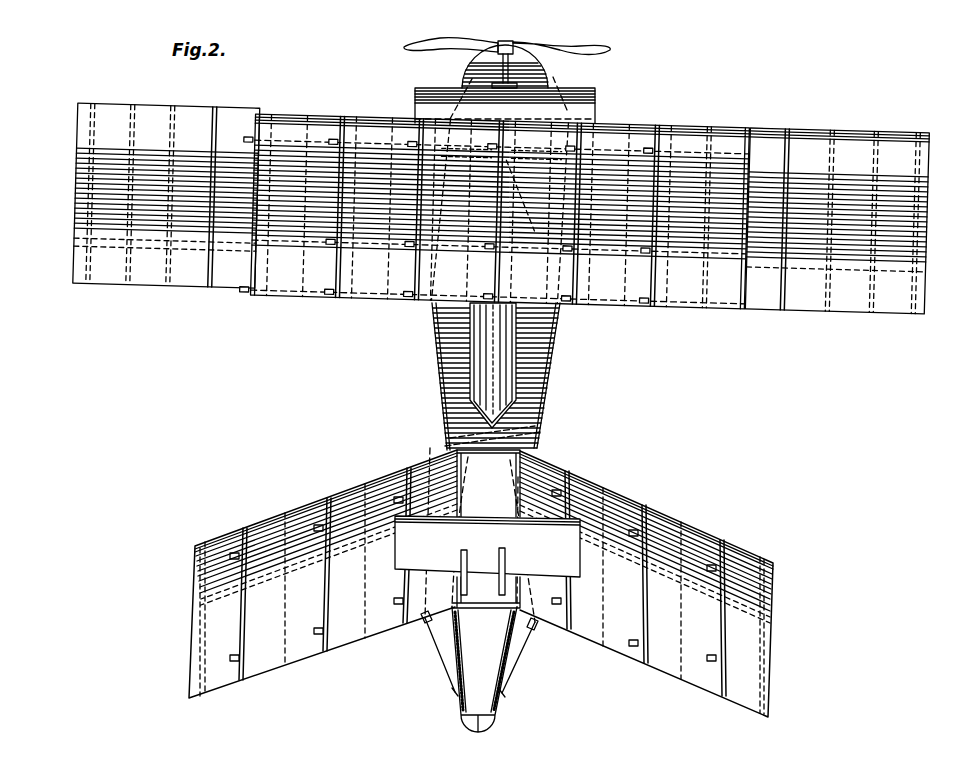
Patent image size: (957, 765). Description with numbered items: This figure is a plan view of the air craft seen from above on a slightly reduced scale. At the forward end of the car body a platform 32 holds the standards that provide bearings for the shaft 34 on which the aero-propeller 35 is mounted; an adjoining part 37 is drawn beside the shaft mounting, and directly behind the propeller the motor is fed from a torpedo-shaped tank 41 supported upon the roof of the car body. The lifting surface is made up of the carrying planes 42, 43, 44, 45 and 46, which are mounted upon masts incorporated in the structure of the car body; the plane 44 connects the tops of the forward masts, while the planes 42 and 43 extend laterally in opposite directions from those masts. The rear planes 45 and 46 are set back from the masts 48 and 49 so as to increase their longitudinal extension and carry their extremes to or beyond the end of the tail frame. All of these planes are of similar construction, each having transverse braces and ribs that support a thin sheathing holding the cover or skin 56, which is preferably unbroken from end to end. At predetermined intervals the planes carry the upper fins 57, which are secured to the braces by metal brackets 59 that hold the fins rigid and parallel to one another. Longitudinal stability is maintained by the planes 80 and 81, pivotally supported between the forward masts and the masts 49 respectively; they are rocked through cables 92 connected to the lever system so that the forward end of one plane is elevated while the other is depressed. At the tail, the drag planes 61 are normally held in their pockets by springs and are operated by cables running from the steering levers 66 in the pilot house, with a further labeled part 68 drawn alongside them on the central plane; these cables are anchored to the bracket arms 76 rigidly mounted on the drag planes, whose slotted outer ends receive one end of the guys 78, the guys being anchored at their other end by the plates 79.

The platform 32 is at (543, 78).
The shaft 34 is at (478, 72).
The aero-propeller 35 is at (556, 47).
The propeller shaft 37 is at (505, 86).
The torpedo-shaped tank 41 is at (505, 328).
The carrying plane 42 is at (92, 250).
The carrying plane 43 is at (653, 127).
The carrying plane 44 is at (287, 278).
The carrying plane 45 is at (200, 630).
The carrying plane 46 is at (744, 564).
The mast 48 is at (442, 470).
The mast 49 is at (462, 580).
The cover or skin 56 is at (720, 143).
The upper fin 57 is at (209, 274).
The metal bracket 59 is at (634, 620).
The drag plane 61 is at (507, 643).
The steering lever 66 is at (467, 145).
The anchor 68 is at (536, 146).
The bracket arm 76 is at (424, 622).
The guy 78 is at (442, 654).
The plate 79 is at (455, 693).
The stabilizing plane 80 is at (588, 108).
The stabilizing plane 81 is at (495, 526).
The cable 92 is at (514, 434).